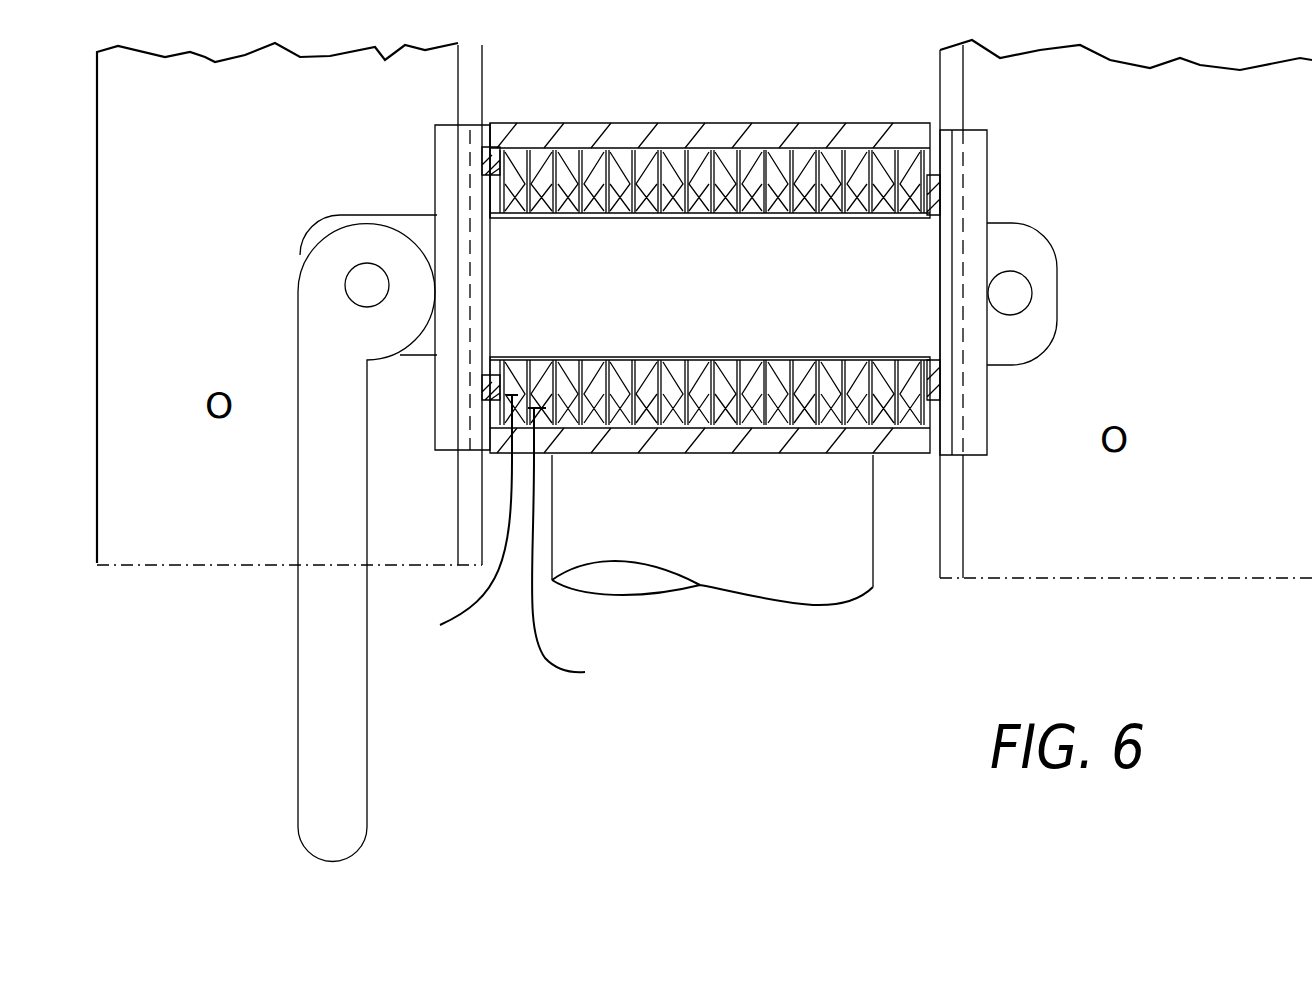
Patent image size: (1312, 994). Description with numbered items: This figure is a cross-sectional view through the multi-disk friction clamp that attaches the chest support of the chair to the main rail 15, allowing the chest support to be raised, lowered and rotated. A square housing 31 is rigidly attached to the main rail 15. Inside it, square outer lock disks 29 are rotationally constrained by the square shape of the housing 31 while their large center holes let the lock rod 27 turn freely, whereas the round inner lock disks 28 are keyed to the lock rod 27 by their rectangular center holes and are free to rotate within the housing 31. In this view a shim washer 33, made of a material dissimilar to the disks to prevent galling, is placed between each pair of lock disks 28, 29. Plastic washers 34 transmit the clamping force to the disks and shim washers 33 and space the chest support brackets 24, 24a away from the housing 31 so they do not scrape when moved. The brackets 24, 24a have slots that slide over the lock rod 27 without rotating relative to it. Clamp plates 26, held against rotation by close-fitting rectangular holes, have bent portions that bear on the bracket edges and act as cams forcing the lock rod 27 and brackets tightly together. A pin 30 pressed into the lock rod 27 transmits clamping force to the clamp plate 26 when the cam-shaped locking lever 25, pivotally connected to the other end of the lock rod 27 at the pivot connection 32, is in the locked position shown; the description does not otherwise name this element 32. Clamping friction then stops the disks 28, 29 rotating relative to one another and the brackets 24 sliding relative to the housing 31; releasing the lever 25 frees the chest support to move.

The main rail 15 is at (767, 599).
The chest support bracket 24 is at (952, 579).
The chest support bracket 24a is at (96, 534).
The locking lever 25 is at (296, 712).
The clamp plate 26 is at (991, 149).
The lock rod 27 is at (1043, 223).
The inner lock disk 28 is at (451, 526).
The outer lock disk 29 is at (582, 557).
The pin 30 is at (1037, 290).
The housing 31 is at (522, 121).
The pivot bracket 32 is at (349, 273).
The shim washer 33 is at (494, 158).
The plastic washer 34 is at (481, 184).